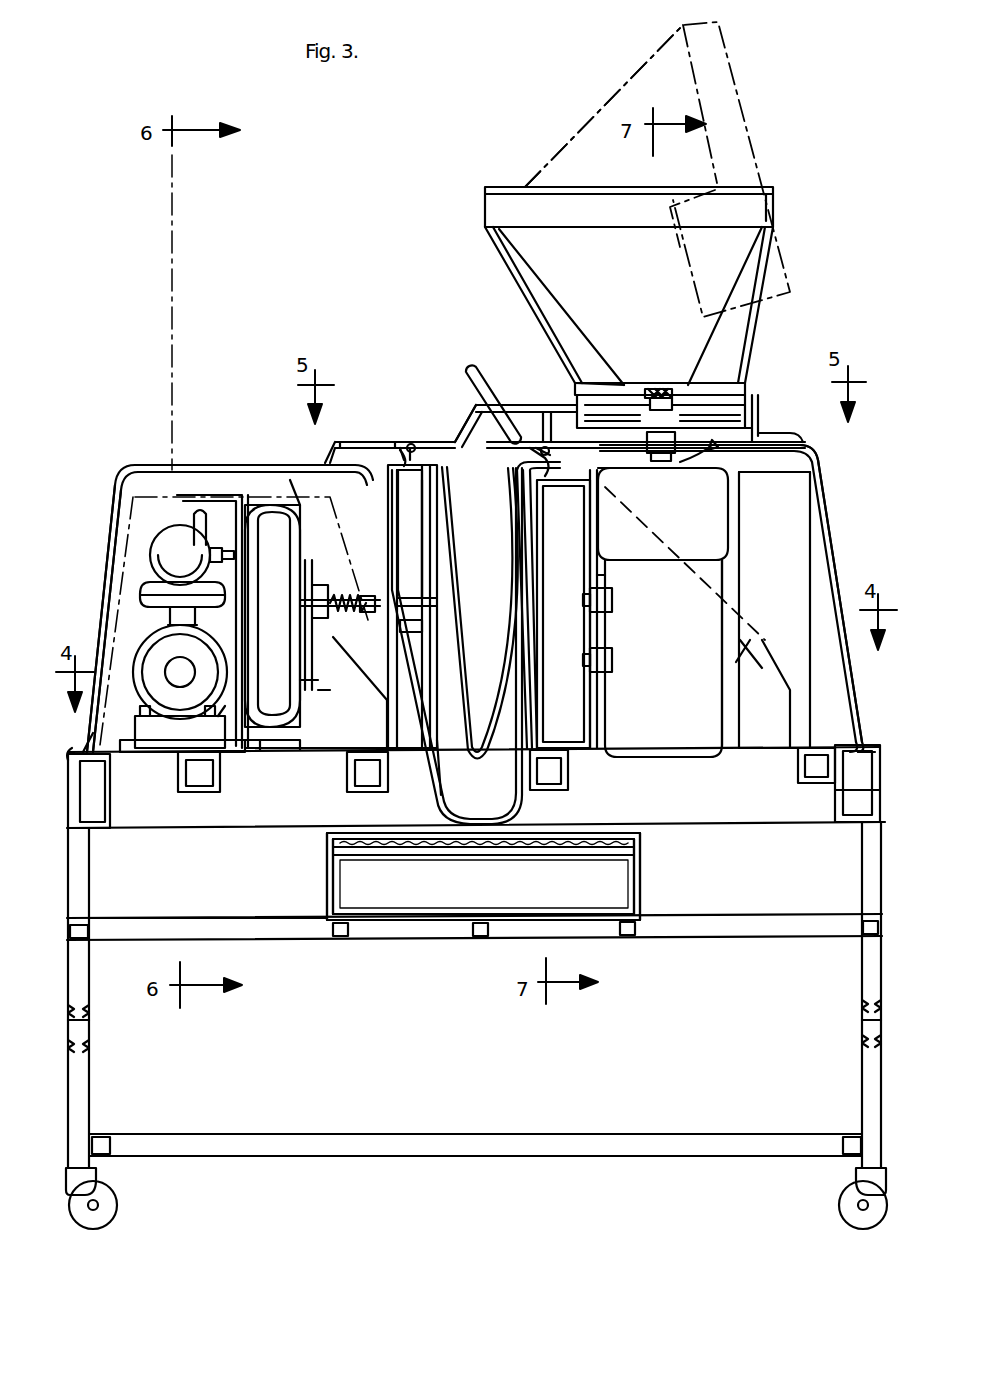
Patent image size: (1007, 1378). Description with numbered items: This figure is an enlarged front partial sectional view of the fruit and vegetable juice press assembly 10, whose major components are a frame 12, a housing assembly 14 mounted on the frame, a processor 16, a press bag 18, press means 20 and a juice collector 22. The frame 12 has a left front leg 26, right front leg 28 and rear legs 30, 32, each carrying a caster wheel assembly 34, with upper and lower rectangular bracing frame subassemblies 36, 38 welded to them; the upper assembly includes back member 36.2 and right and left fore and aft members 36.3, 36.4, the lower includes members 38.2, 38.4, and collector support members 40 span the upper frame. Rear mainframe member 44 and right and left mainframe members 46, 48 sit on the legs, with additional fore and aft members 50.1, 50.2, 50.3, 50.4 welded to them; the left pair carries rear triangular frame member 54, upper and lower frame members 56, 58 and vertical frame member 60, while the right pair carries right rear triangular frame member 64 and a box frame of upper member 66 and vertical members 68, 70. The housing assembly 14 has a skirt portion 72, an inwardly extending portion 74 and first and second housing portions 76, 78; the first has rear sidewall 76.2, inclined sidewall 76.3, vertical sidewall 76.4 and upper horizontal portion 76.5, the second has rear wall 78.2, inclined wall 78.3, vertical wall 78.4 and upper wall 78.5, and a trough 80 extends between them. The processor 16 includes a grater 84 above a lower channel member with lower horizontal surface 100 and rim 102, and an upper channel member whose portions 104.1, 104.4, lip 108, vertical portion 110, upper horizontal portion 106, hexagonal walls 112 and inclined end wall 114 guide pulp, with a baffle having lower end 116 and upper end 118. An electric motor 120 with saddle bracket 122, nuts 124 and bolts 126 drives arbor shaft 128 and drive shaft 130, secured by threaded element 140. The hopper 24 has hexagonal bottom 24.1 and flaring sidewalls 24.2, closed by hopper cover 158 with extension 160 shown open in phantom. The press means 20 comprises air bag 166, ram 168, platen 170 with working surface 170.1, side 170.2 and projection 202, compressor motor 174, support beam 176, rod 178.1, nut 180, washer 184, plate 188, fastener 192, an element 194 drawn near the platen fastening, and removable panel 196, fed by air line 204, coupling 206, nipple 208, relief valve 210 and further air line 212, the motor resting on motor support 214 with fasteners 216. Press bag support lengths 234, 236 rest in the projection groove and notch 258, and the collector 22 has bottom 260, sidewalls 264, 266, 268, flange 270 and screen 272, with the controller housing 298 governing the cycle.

The fruit and vegetable juice press assembly 10 is at (365, 262).
The frame 12 is at (333, 1187).
The housing assembly 14 is at (108, 440).
The processor 16 is at (432, 168).
The press bag 18 is at (508, 716).
The press means 20 is at (228, 520).
The juice collector 22 is at (318, 881).
The hopper 24 is at (520, 284).
The lower hexagonal opening 24.1 is at (586, 388).
The upwardly and outwardly extending sidewall portions 24.2 is at (748, 330).
The left front vertical leg 26 is at (92, 1048).
The right front vertical leg 28 is at (862, 1038).
The left rear leg 30 is at (84, 975).
The right rear leg 32 is at (865, 969).
The caster wheel assembly 34 is at (120, 1199).
The upper rectangular bracing frame subassembly 36 is at (748, 950).
The back laterally extending frame member 36.2 is at (170, 919).
The right fore and aft extending member 36.3 is at (866, 920).
The left fore and aft extending member 36.4 is at (82, 922).
The lower rectangular bracing frame subassembly 38 is at (645, 1168).
The back member of lower bracing frame 38.2 is at (296, 1134).
The left member of lower bracing frame 38.4 is at (106, 1136).
The collector support members 40 is at (336, 945).
The rear mainframe member 44 is at (255, 833).
The right fore and aft mainframe member 46 is at (812, 810).
The left fore and aft mainframe member 48 is at (112, 836).
The additional fore and aft frame member 50.1 is at (195, 793).
The additional fore and aft frame member 50.2 is at (352, 793).
The additional fore and aft frame member 50.3 is at (556, 791).
The additional fore and aft frame member 50.4 is at (816, 786).
The rear triangular frame member 54 is at (367, 735).
The upper frame member 56 is at (210, 498).
The lower frame member 58 is at (224, 753).
The vertical frame member 60 is at (250, 747).
The right rear triangular frame member 64 is at (735, 615).
The upper frame member of box frame assembly 66 is at (563, 614).
The left vertical frame member 68 is at (532, 551).
The right vertical frame member 70 is at (600, 717).
The skirt portion 72 is at (94, 793).
The inwardly extending portion 74 is at (856, 746).
The first housing portion 76 is at (828, 474).
The rear sidewall of first housing portion 76.2 is at (812, 452).
The right-hand inclined sidewall 76.3 is at (840, 532).
The left-hand vertically extending sidewall 76.4 is at (518, 639).
The upper horizontal portion 76.5 is at (775, 456).
The second housing portion 78 is at (108, 478).
The rear wall of second housing portion 78.2 is at (118, 531).
The left inclined wall 78.3 is at (110, 503).
The right vertical wall 78.4 is at (375, 704).
The upper horizontal wall 78.5 is at (262, 518).
The trough 80 is at (437, 809).
The grater 84 is at (628, 394).
The lower horizontal surface 100 is at (548, 403).
The rim 102 is at (762, 430).
The right-hand portion of lower horizontal portion 104.1 is at (766, 442).
The left-hand portion of lower horizontal portion 104.4 is at (358, 440).
The upper horizontal portion 106 is at (506, 404).
The downwardly extending lip 108 is at (343, 441).
The vertical portion 110 is at (750, 418).
The vertically extending walls 112 is at (753, 400).
The left-hand end wall 114 is at (456, 402).
The lower end of baffle 116 is at (492, 444).
The upper end of baffle 118 is at (466, 367).
The electric motor 120 is at (680, 651).
The saddle bracket 122 is at (612, 621).
The nuts 124 is at (614, 591).
The bolts 126 is at (592, 603).
The arbor shaft 128 is at (656, 472).
The drive shaft 130 is at (712, 462).
The threaded element 140 is at (656, 388).
The hopper cover 158 is at (506, 192).
The hopper cover extension 160 is at (605, 107).
The air bag 166 is at (276, 730).
The ram 168 is at (336, 686).
The platen 170 is at (386, 462).
The vertical working surface 170.1 is at (412, 557).
The left-hand side of platen 170.2 is at (428, 540).
The compressor motor 174 is at (133, 672).
The slidable support beam 176 is at (330, 590).
The horizontal support rod 178.1 is at (300, 680).
The nut 180 is at (352, 582).
The washer 184 is at (350, 611).
The disk like plate 188 is at (282, 502).
The fastener 192 is at (428, 607).
The cross member 194 is at (424, 629).
The removable panel 196 is at (442, 752).
The projection 202 is at (408, 449).
The air line 204 is at (190, 542).
The coupling 206 is at (255, 625).
The nipple 208 is at (218, 520).
The relief valve 210 is at (155, 556).
The further air line 212 is at (160, 575).
The motor support 214 is at (122, 754).
The fasteners 216 is at (140, 716).
The left intermediate length 234 is at (396, 440).
The right intermediate length 236 is at (558, 460).
The notch 258 is at (550, 445).
The bottom 260 is at (450, 912).
The rear sidewall 264 is at (597, 896).
The left sidewall 266 is at (320, 895).
The right sidewall 268 is at (643, 895).
The inwardly extending flange 270 is at (340, 861).
The removable screen 272 is at (492, 862).
The controller housing 298 is at (790, 561).